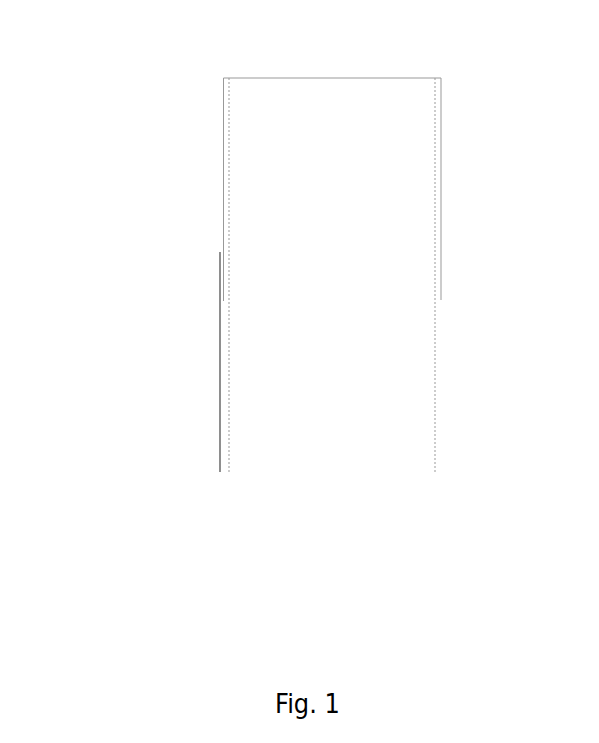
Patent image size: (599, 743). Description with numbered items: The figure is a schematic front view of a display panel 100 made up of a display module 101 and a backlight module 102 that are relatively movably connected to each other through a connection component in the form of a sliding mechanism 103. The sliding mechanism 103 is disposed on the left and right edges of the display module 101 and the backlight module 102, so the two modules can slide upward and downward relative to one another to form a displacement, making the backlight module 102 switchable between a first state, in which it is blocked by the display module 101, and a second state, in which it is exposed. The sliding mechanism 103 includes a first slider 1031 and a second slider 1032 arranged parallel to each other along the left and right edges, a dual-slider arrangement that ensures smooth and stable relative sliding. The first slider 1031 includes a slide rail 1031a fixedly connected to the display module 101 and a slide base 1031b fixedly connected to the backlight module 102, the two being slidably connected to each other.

The display panel 100 is at (121, 88).
The display module 101 is at (410, 195).
The backlight module 102 is at (410, 372).
The sliding mechanism 103 is at (325, 552).
The first slider 1031 is at (222, 438).
The second slider 1032 is at (437, 452).
The slide rail 1031a is at (223, 230).
The slide base 1031b is at (220, 333).